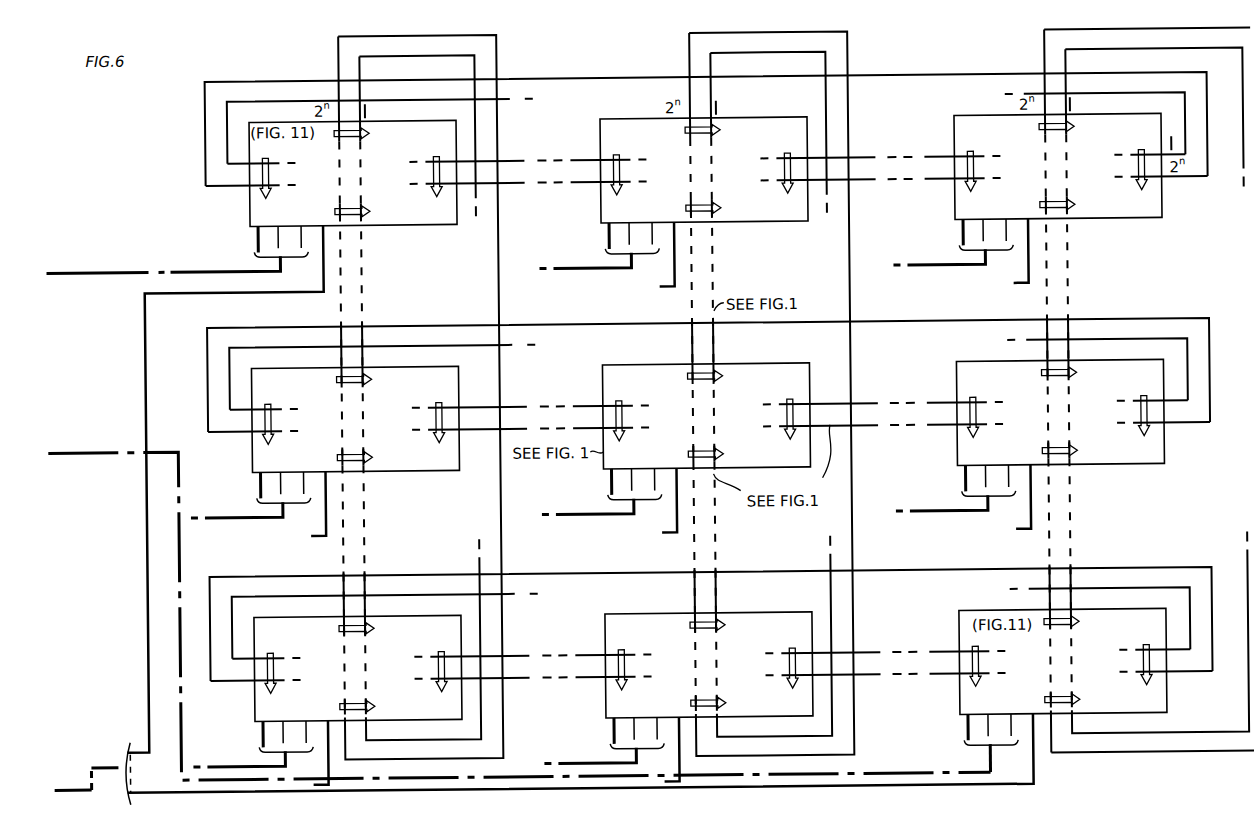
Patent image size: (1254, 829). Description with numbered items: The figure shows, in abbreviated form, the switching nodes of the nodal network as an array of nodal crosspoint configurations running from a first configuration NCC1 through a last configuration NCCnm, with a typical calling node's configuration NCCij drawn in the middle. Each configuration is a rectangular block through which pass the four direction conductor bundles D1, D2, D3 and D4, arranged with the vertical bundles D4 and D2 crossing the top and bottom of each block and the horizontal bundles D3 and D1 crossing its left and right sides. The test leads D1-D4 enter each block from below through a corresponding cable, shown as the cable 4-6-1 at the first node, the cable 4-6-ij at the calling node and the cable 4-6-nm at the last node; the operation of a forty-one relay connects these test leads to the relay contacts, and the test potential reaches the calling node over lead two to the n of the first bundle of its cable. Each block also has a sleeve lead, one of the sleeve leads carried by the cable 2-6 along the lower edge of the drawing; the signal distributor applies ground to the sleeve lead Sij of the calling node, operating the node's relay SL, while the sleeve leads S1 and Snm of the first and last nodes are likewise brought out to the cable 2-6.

The D1 conductor bundle D1 is at (791, 432).
The D2 conductor bundle D2 is at (1086, 705).
The D3 conductor bundle D3 is at (624, 434).
The D4 conductor bundle D4 is at (1086, 627).
The nodal crosspoint configuration NCC1 is at (252, 215).
The nodal crosspoint configuration of the calling node NCCij is at (603, 378).
The nodal crosspoint configuration NCCnm is at (957, 620).
The test leads D1 through D4 D1-D4 is at (258, 246).
The sleeve lead S1 is at (225, 489).
The sleeve lead of the calling node Sij is at (673, 536).
The sleeve lead Snm is at (1034, 771).
The cable (4-6)1 4-6-1 is at (125, 270).
The cable (4-6)i,j 4-6-ij is at (610, 516).
The cable (4-6)nm 4-6-nm is at (132, 450).
The cable 2-6 is at (114, 762).